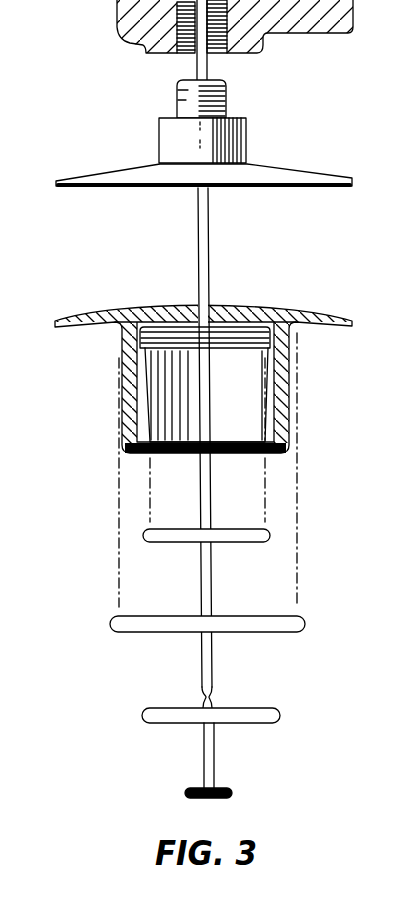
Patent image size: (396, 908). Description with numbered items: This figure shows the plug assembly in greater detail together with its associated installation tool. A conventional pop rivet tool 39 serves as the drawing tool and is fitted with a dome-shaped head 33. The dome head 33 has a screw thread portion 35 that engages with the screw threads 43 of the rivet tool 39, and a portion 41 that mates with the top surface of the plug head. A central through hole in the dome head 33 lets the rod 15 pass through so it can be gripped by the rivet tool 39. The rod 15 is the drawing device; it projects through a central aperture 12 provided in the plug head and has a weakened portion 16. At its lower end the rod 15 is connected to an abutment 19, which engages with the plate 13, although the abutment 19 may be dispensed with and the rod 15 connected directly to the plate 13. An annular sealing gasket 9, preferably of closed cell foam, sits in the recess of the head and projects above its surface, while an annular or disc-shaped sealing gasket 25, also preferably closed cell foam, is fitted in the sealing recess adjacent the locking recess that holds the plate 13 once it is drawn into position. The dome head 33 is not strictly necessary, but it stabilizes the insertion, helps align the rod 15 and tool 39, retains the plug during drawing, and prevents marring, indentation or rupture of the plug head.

The annular sealing gasket 9 is at (303, 623).
The central aperture 12 is at (223, 307).
The plate 13 is at (147, 715).
The rod 15 is at (212, 588).
The weakened portion 16 is at (213, 698).
The abutment 19 is at (232, 792).
The sealing gasket 25 is at (263, 535).
The dome-shaped head 33 is at (225, 138).
The screw thread portion 35 is at (178, 96).
The pop rivet tool 39 is at (307, 14).
The mating portion 41 is at (287, 173).
The screw threads 43 is at (216, 38).